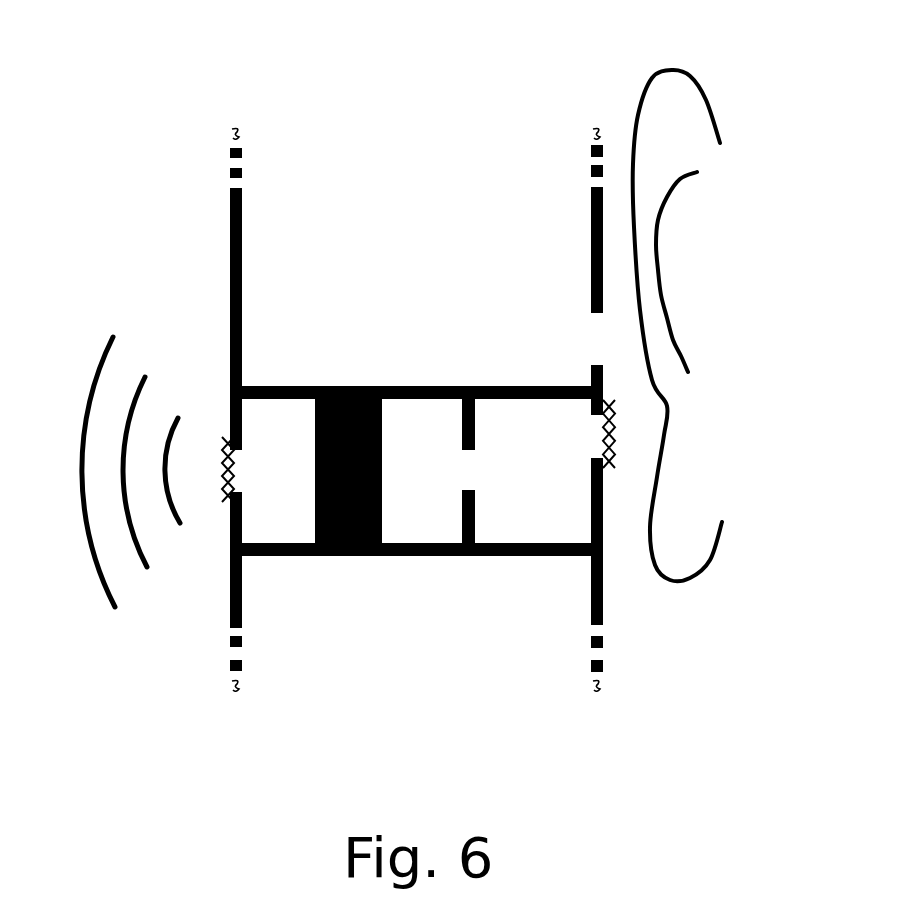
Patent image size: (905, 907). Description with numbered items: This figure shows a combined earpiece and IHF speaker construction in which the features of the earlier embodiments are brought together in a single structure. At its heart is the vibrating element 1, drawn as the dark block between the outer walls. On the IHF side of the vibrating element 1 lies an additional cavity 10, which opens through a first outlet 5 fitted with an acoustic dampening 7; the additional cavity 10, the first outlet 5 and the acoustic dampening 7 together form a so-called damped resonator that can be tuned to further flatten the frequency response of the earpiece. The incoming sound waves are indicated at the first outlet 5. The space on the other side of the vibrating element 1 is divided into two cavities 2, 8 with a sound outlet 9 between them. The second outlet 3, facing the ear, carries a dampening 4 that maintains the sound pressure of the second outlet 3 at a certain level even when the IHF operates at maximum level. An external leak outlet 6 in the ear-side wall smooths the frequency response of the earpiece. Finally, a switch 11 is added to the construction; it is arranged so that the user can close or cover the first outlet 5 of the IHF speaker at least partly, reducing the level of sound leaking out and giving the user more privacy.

The vibrating element 1 is at (383, 387).
The cavity 2 is at (533, 505).
The second outlet 3 is at (580, 429).
The dampening 4 is at (615, 447).
The first outlet 5 is at (186, 458).
The external leak outlet 6 is at (580, 333).
The acoustic dampening 7 is at (228, 480).
The cavity 8 is at (417, 507).
The sound outlet 9 is at (451, 452).
The additional cavity 10 is at (275, 507).
The switch 11 is at (225, 297).